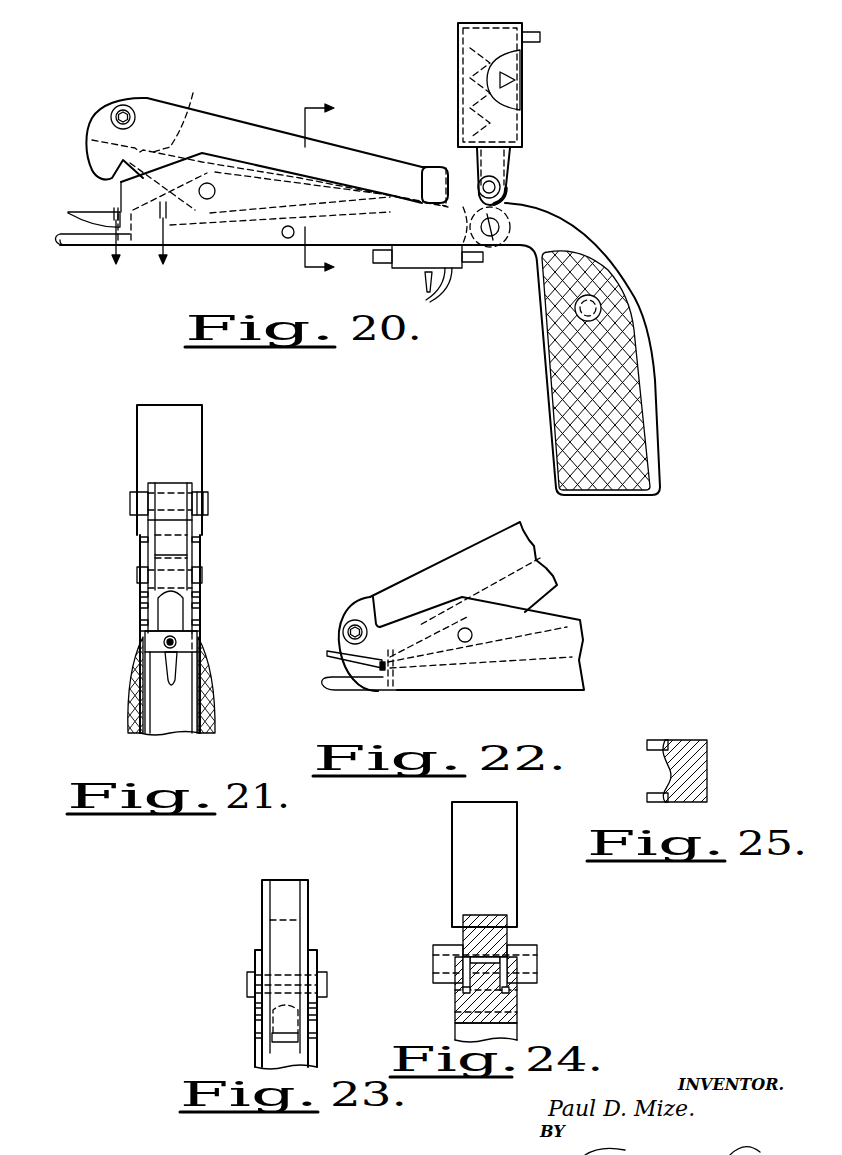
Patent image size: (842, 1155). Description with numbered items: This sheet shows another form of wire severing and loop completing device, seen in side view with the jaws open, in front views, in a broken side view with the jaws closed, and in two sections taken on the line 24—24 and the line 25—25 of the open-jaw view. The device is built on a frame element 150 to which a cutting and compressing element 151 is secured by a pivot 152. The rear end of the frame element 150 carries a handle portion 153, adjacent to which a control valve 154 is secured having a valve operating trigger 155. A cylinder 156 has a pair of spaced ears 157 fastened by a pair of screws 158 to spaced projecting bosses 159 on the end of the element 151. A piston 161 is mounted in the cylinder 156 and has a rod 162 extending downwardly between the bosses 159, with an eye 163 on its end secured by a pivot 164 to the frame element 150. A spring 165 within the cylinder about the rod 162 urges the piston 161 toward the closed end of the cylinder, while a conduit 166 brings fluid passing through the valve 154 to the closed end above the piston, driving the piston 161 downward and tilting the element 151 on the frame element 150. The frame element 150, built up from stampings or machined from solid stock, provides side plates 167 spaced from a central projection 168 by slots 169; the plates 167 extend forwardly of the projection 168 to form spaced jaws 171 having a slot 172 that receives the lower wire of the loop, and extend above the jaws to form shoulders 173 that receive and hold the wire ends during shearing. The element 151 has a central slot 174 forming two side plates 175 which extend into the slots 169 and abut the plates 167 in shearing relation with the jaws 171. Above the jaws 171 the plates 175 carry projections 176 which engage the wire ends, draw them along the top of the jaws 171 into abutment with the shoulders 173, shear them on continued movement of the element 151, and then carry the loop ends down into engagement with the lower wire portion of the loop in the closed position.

In FIG. 20, the frame element 150 is at (255, 245).
In FIG. 21, the frame element 150 is at (170, 693).
In FIG. 22, the frame element 150 is at (482, 692).
In FIG. 25, the frame element 150 is at (710, 768).
In FIG. 23, the frame element 150 is at (257, 1062).
In FIG. 24, the frame element 150 is at (520, 1030).
In FIG. 20, the cutting and compressing element 151 is at (233, 113).
In FIG. 22, the cutting and compressing element 151 is at (480, 528).
In FIG. 23, the cutting and compressing element 151 is at (292, 895).
In FIG. 20, the pivot 152 is at (207, 185).
In FIG. 22, the pivot 152 is at (472, 636).
In FIG. 20, the handle portion 153 is at (633, 327).
In FIG. 21, the handle portion 153 is at (212, 665).
In FIG. 20, the control valve 154 is at (462, 275).
In FIG. 21, the control valve 154 is at (190, 640).
In FIG. 20, the valve operating trigger 155 is at (425, 290).
In FIG. 21, the valve operating trigger 155 is at (172, 672).
In FIG. 20, the cylinder 156 is at (523, 103).
In FIG. 21, the cylinder 156 is at (193, 425).
In FIG. 24, the cylinder 156 is at (460, 838).
In FIG. 20, the spaced ears 157 is at (510, 160).
In FIG. 20, the screws 158 is at (507, 183).
In FIG. 20, the spaced projecting bosses 159 is at (451, 167).
In FIG. 20, the piston 161 is at (513, 50).
In FIG. 20, the rod 162 is at (510, 98).
In FIG. 20, the eye 163 is at (500, 210).
In FIG. 20, the pivot 164 is at (490, 232).
In FIG. 20, the spring 165 is at (505, 85).
In FIG. 20, the conduit 166 is at (541, 36).
In FIG. 25, the side plates 167 is at (652, 740).
In FIG. 24, the side plates 167 is at (482, 957).
In FIG. 24, the central projection 168 is at (520, 972).
In FIG. 24, the slots 169 is at (467, 992).
In FIG. 20, the spaced jaws 171 is at (68, 212).
In FIG. 21, the spaced jaws 171 is at (200, 590).
In FIG. 22, the spaced jaws 171 is at (327, 652).
In FIG. 23, the spaced jaws 171 is at (317, 1016).
In FIG. 20, the slot 172 is at (57, 234).
In FIG. 22, the slot 172 is at (320, 680).
In FIG. 20, the shoulders 173 is at (110, 195).
In FIG. 22, the shoulders 173 is at (370, 597).
In FIG. 20, the central slot 174 is at (192, 116).
In FIG. 24, the central slot 174 is at (495, 925).
In FIG. 24, the side plates 175 is at (512, 965).
In FIG. 20, the projections 176 is at (90, 173).
In FIG. 21, the projections 176 is at (135, 547).
In FIG. 22, the projections 176 is at (365, 697).
In FIG. 20, the line 24— 24 is at (327, 195).
In FIG. 20, the line 25— 25 is at (129, 245).